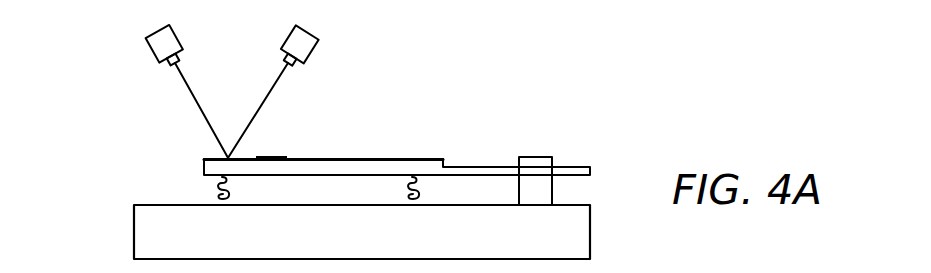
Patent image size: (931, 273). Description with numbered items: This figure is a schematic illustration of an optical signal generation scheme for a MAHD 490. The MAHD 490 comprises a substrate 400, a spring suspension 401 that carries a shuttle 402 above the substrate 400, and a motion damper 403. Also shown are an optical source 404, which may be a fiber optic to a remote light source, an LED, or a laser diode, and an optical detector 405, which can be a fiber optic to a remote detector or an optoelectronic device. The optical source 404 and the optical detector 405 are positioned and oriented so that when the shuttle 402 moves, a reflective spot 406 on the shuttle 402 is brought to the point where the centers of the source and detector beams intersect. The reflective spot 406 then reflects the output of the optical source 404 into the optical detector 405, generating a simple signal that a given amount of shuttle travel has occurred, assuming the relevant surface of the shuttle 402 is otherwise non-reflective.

The substrate 400 is at (397, 244).
The spring suspension 401 is at (407, 187).
The shuttle 402 is at (445, 166).
The motion damper 403 is at (540, 190).
The optical source 404 is at (161, 33).
The optical detector 405 is at (302, 33).
The reflective spot 406 is at (272, 157).
The MAHD 490 is at (569, 104).